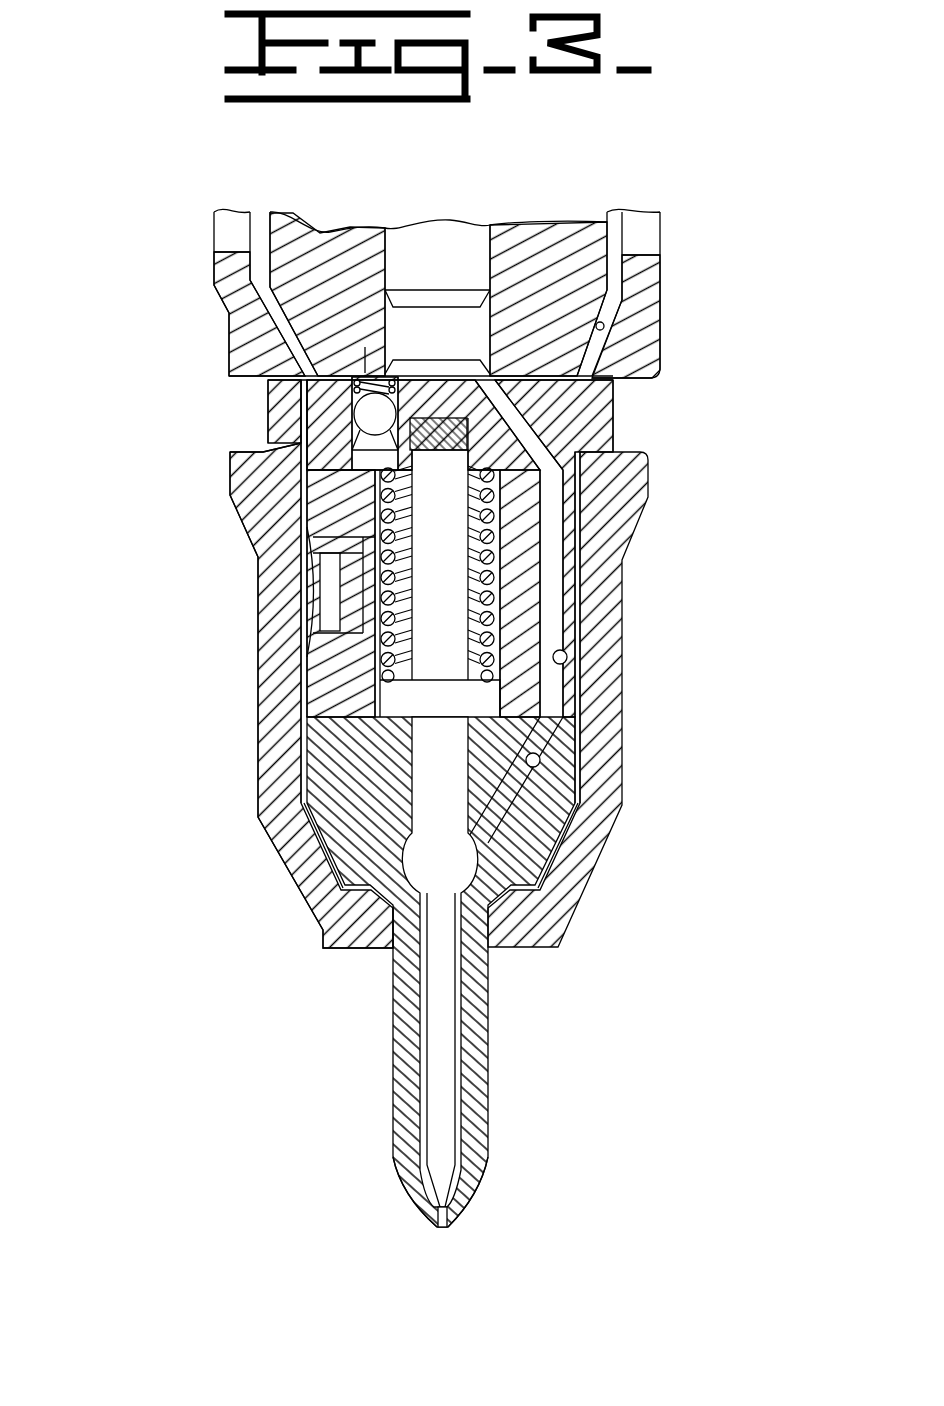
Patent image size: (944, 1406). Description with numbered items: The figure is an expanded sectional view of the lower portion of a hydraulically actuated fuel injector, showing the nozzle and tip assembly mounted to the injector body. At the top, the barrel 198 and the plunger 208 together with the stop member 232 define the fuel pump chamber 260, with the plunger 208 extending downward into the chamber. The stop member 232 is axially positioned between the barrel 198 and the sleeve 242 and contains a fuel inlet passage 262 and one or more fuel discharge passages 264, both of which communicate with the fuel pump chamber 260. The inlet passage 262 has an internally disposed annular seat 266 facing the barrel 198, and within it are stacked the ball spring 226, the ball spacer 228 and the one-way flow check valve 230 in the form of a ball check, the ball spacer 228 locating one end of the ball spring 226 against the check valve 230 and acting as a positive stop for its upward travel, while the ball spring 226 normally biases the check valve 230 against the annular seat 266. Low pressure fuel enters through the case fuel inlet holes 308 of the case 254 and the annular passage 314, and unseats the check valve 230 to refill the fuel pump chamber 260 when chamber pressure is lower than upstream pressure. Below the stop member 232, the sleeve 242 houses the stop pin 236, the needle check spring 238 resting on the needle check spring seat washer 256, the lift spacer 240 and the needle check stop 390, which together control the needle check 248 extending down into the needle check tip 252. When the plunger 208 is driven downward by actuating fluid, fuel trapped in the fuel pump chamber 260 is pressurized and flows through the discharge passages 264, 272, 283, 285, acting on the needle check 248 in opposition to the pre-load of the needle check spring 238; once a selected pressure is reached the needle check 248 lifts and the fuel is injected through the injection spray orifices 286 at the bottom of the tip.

The barrel 198 is at (545, 248).
The plunger 208 is at (404, 240).
The ball spring 226 is at (365, 350).
The ball spacer 228 is at (303, 390).
The one-way flow check valve 230 is at (370, 413).
The stop member 232 is at (577, 474).
The stop pin 236 is at (449, 547).
The needle check spring 238 is at (306, 660).
The lift spacer 240 is at (485, 700).
The sleeve 242 is at (568, 585).
The needle check 248 is at (465, 1224).
The needle check tip 252 is at (528, 854).
The case 254 is at (537, 943).
The needle check spring seat washer 256 is at (247, 478).
The fuel pump chamber 260 is at (437, 332).
The fuel inlet passage 262 is at (285, 378).
The fuel discharge passage 264 is at (604, 326).
The annular seat 266 is at (292, 442).
The discharge passage 272 is at (565, 660).
The discharge passage 283 is at (540, 762).
The discharge passage 285 is at (452, 1150).
The injection spray orifices 286 is at (444, 1232).
The case fuel inlet holes 308 is at (232, 250).
The annular passage 314 is at (262, 298).
The needle check stop 390 is at (465, 432).